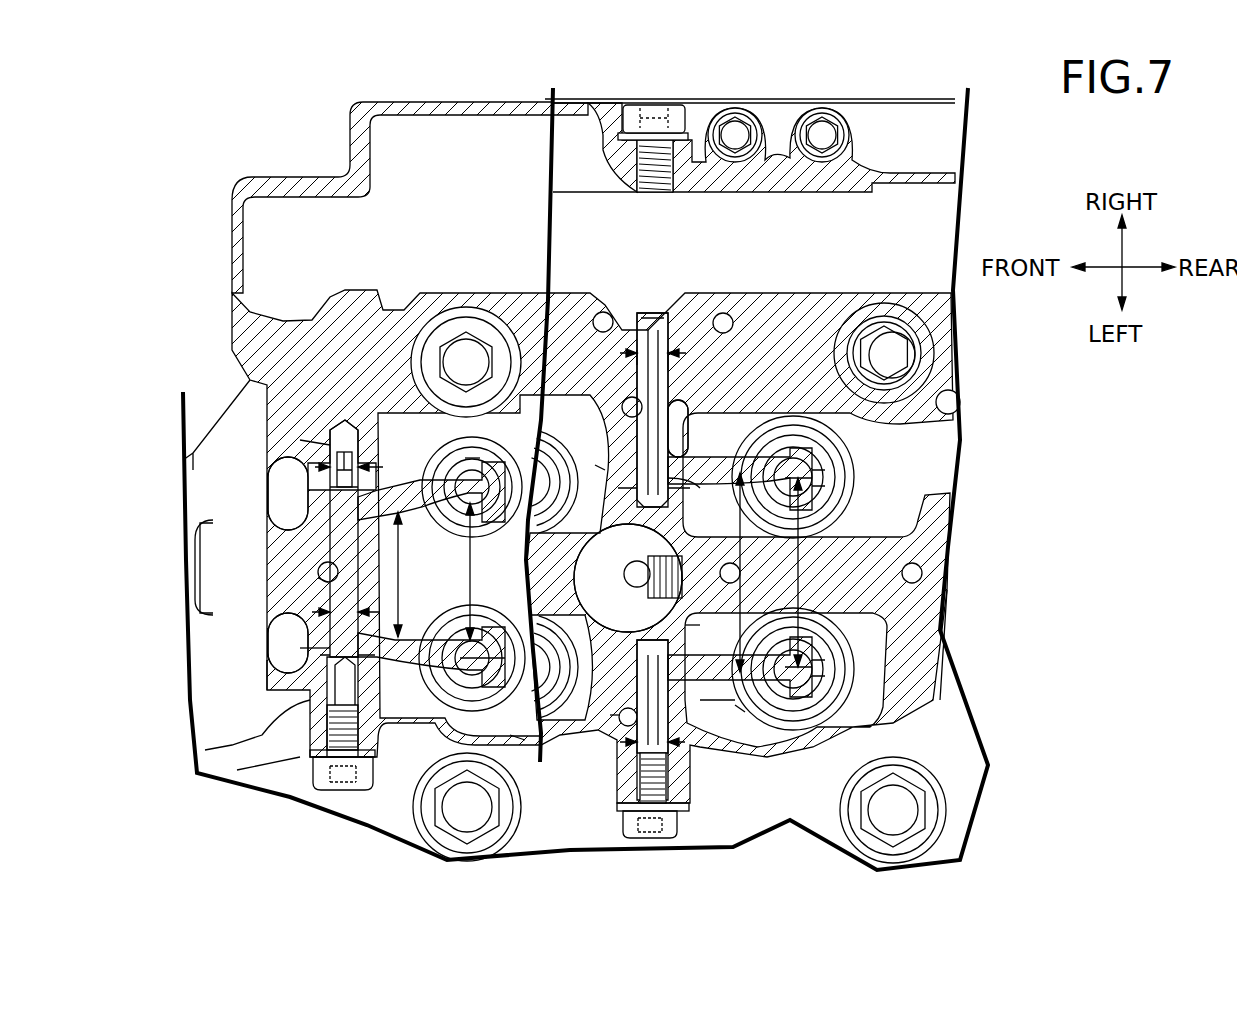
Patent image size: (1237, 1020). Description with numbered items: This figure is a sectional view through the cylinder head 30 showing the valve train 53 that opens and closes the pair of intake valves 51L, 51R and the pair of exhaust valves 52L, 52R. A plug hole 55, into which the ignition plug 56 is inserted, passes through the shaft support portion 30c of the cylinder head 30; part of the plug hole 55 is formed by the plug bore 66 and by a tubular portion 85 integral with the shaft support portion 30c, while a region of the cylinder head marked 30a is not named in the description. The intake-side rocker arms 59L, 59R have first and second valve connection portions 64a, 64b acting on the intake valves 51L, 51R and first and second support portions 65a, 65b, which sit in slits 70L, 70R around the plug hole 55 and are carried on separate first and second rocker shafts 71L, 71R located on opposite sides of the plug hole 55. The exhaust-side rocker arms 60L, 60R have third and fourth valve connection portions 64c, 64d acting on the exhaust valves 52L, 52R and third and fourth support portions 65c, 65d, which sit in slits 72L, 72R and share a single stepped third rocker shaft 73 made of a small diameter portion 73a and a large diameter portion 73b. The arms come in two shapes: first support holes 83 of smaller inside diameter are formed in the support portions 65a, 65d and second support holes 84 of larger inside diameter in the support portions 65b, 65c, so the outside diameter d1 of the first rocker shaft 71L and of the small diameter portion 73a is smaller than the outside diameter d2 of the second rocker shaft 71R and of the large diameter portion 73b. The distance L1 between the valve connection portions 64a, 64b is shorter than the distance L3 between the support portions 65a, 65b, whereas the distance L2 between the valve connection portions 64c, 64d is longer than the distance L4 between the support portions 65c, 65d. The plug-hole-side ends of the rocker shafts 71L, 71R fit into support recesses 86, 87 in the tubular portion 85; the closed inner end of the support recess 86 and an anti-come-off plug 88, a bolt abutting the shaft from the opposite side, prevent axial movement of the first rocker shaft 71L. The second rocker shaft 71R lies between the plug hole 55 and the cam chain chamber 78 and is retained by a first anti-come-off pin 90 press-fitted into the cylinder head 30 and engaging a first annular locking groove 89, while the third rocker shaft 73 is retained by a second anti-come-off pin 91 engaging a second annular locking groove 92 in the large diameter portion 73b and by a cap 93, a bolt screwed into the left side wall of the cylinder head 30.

The cylinder head 30 is at (758, 822).
The cylinder head cover 30a is at (232, 240).
The shaft support portion 30c is at (944, 617).
The intake valve 51R is at (825, 478).
The intake valve 51L is at (825, 668).
The exhaust valve 52R is at (474, 452).
The exhaust valve 52L is at (520, 740).
The valve train 53 is at (740, 712).
The plug hole 55 is at (630, 532).
The ignition plug 56 is at (624, 578).
The intake-side rocker arm 59R is at (735, 458).
The intake-side rocker arm 59L is at (810, 725).
The exhaust-side rocker arm 60R is at (440, 468).
The exhaust-side rocker arm 60L is at (430, 705).
The first valve connection portion 64a is at (812, 695).
The second valve connection portion 64b is at (815, 508).
The third valve connection portion 64c is at (483, 698).
The fourth valve connection portion 64d is at (503, 523).
The first support portion 65a is at (718, 705).
The second support portion 65b is at (688, 430).
The third support portion 65c is at (290, 665).
The fourth support portion 65d is at (288, 530).
The plug bore 66 is at (688, 625).
The slit 70R is at (598, 465).
The slit 70L is at (615, 716).
The second rocker shaft 71R is at (637, 330).
The first rocker shaft 71L is at (670, 760).
The slit 72R is at (330, 492).
The slit 72L is at (322, 692).
The third rocker shaft 73 is at (268, 680).
The small diameter portion 73a is at (318, 447).
The large diameter portion 73b is at (315, 648).
The cam chain chamber 78 is at (922, 254).
The first support hole 83 is at (322, 506).
The second support hole 84 is at (675, 490).
The tubular portion 85 is at (499, 660).
The support recess 86 is at (590, 660).
The support recess 87 is at (600, 480).
The anti-come-off plug 88 is at (660, 840).
The first annular locking groove 89 is at (668, 362).
The first anti-come-off pin 90 is at (636, 360).
The second anti-come-off pin 91 is at (318, 578).
The second annular locking groove 92 is at (200, 560).
The cap 93 is at (320, 778).
The outside diameter d1 is at (340, 458).
The outside diameter d2 is at (318, 610).
The distance L1 is at (805, 575).
The distance L2 is at (465, 565).
The distance L3 is at (744, 570).
The distance L4 is at (400, 585).